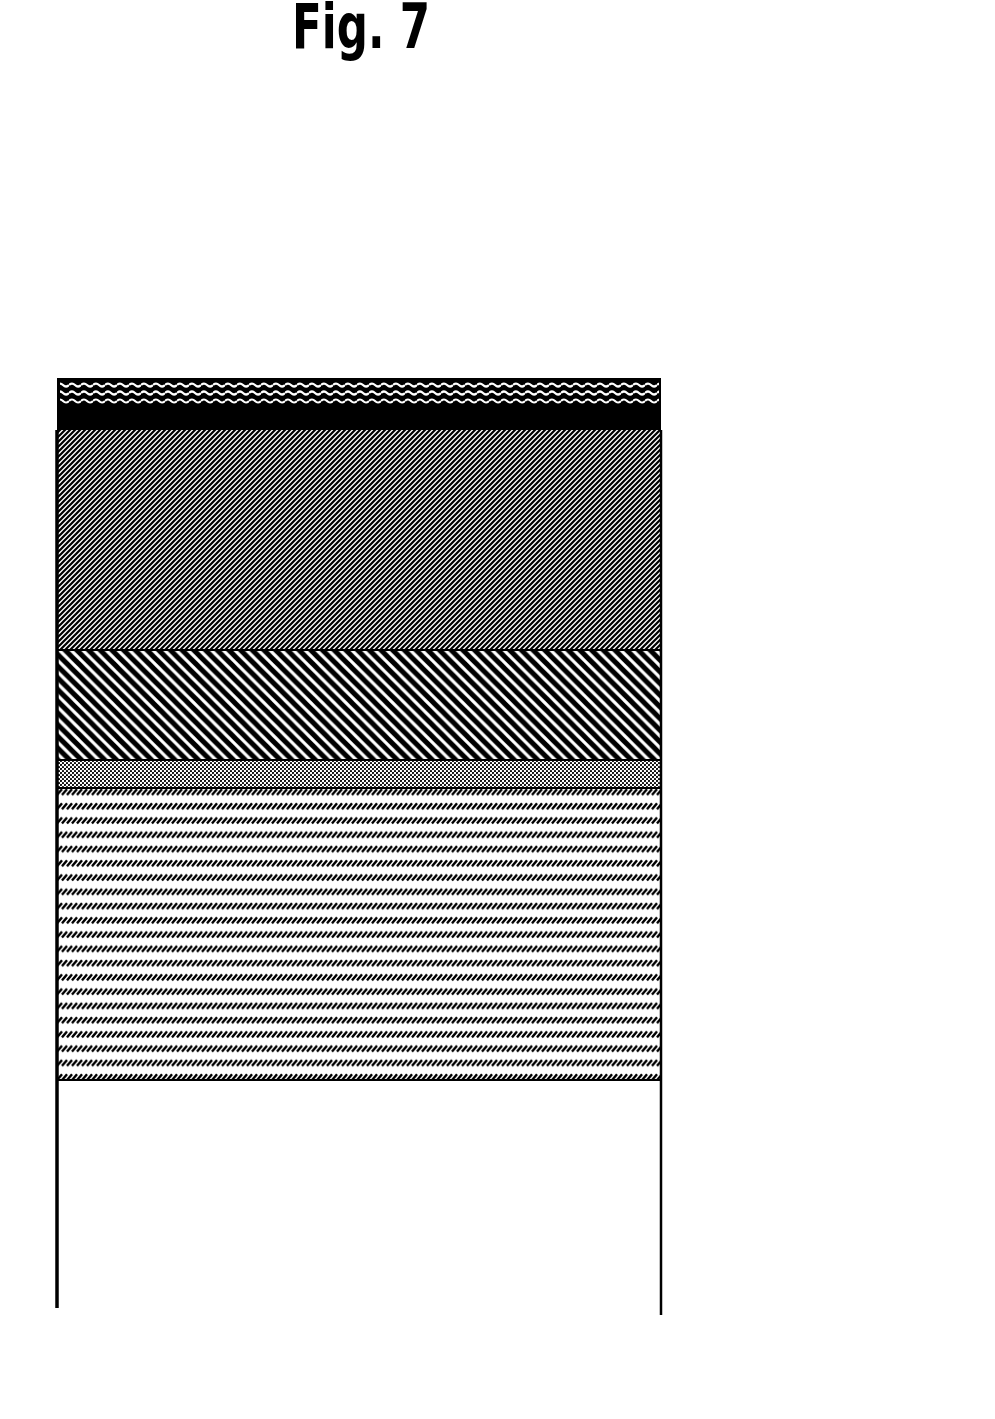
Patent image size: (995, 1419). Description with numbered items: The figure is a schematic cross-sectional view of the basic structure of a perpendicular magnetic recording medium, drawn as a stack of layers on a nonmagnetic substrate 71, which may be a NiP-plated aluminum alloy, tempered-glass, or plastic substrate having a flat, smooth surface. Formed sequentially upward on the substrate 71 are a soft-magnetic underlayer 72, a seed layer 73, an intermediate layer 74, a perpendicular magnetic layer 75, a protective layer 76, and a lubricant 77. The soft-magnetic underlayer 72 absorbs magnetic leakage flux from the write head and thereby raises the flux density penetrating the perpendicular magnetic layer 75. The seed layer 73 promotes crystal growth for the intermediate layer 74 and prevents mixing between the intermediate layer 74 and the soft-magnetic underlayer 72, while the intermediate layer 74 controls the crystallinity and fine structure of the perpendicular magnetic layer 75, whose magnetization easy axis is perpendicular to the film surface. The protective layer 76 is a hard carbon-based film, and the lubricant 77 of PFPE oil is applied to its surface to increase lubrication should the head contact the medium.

The nonmagnetic substrate 71 is at (661, 1150).
The soft-magnetic underlayer 72 is at (661, 921).
The seed layer 73 is at (661, 777).
The intermediate layer 74 is at (661, 692).
The perpendicular magnetic layer 75 is at (661, 548).
The protective layer 76 is at (661, 421).
The lubricant 77 is at (661, 393).